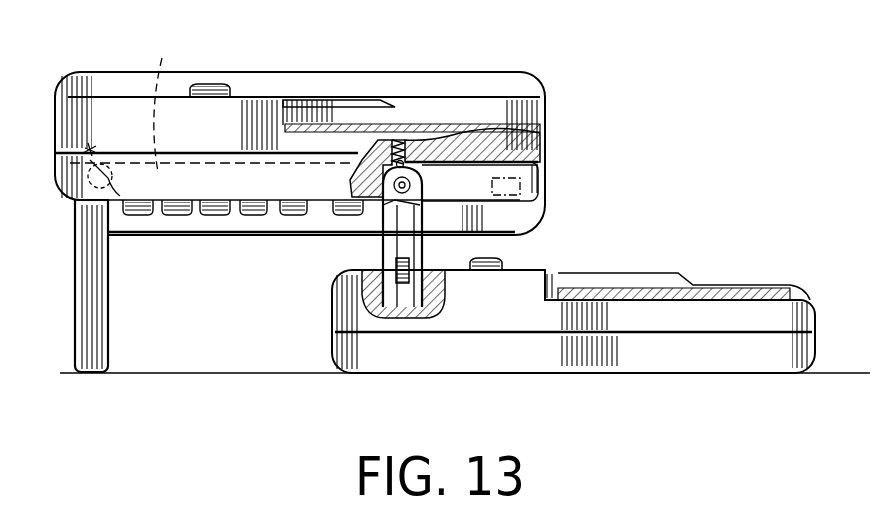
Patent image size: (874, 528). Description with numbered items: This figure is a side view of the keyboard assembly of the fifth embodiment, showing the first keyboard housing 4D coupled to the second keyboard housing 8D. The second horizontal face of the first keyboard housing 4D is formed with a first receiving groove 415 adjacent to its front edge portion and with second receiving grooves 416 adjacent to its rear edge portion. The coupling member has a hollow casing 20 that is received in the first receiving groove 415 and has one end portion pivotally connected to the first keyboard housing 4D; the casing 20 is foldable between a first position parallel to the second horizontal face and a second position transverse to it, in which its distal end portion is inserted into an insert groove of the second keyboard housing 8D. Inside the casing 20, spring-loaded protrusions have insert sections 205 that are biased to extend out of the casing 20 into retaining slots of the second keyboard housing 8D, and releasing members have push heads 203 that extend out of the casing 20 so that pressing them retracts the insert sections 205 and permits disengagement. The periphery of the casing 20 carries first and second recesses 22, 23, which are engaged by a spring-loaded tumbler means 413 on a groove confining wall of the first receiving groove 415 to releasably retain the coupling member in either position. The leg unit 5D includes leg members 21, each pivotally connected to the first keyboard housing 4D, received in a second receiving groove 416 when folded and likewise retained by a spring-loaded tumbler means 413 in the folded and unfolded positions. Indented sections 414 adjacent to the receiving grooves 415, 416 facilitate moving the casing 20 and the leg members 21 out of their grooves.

The leg unit 5D is at (60, 372).
The second keyboard housing 8D is at (816, 294).
The leg member 21 is at (90, 277).
The first recess 22 is at (125, 165).
The second recess 23 is at (138, 216).
The casing 20 is at (392, 250).
The push head 203 is at (356, 300).
The insert section 205 is at (425, 290).
The spring-loaded tumbler means 413 is at (88, 148).
The indented section 414 is at (293, 240).
The first receiving groove 415 is at (540, 213).
The second receiving groove 416 is at (164, 99).
The first keyboard housing 4D is at (540, 152).